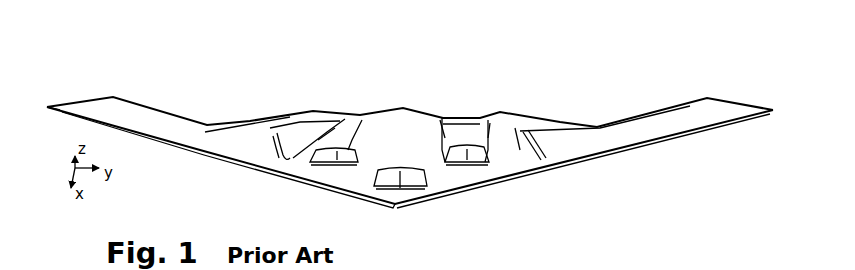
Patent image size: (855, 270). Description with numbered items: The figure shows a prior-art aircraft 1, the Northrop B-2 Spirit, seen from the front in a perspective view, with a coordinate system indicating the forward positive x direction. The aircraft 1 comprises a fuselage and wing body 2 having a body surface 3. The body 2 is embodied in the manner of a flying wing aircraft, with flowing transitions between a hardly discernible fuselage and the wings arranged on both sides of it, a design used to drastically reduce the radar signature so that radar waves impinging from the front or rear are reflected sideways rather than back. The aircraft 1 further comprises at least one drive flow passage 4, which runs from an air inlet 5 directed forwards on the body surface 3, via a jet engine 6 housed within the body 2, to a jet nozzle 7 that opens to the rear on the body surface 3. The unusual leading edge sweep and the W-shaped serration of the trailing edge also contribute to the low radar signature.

The aircraft 1 is at (191, 46).
The fuselage and wing body 2 is at (242, 138).
The body surface 3 is at (262, 133).
The drive flow passage 4 is at (316, 139).
The air inlet 5 is at (331, 166).
The jet engine 6 is at (409, 161).
The jet nozzle 7 is at (350, 111).